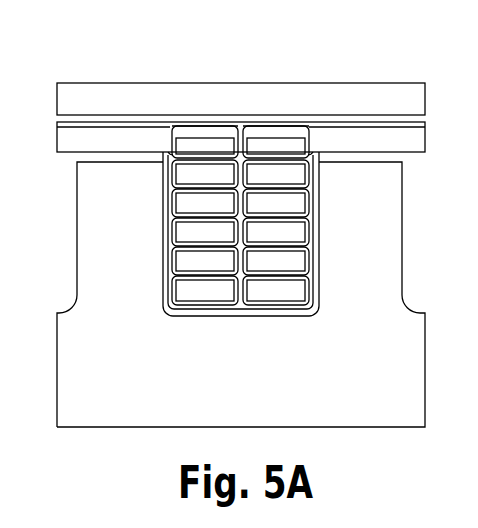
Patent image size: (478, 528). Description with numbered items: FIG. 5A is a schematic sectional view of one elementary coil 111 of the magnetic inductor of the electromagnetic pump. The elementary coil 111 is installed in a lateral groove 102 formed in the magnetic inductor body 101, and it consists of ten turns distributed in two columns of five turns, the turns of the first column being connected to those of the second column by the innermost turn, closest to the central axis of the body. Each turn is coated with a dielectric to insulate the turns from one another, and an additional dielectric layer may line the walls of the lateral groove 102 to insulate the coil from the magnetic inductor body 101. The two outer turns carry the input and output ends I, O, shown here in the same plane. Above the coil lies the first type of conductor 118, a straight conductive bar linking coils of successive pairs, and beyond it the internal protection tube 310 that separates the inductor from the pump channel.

The internal protection tube 310 is at (107, 98).
The first type of conductor 118 is at (378, 137).
The input end I is at (212, 147).
The output end O is at (277, 145).
The elementary coil 111 is at (187, 262).
The lateral groove 102 is at (165, 290).
The magnetic inductor body 101 is at (108, 378).